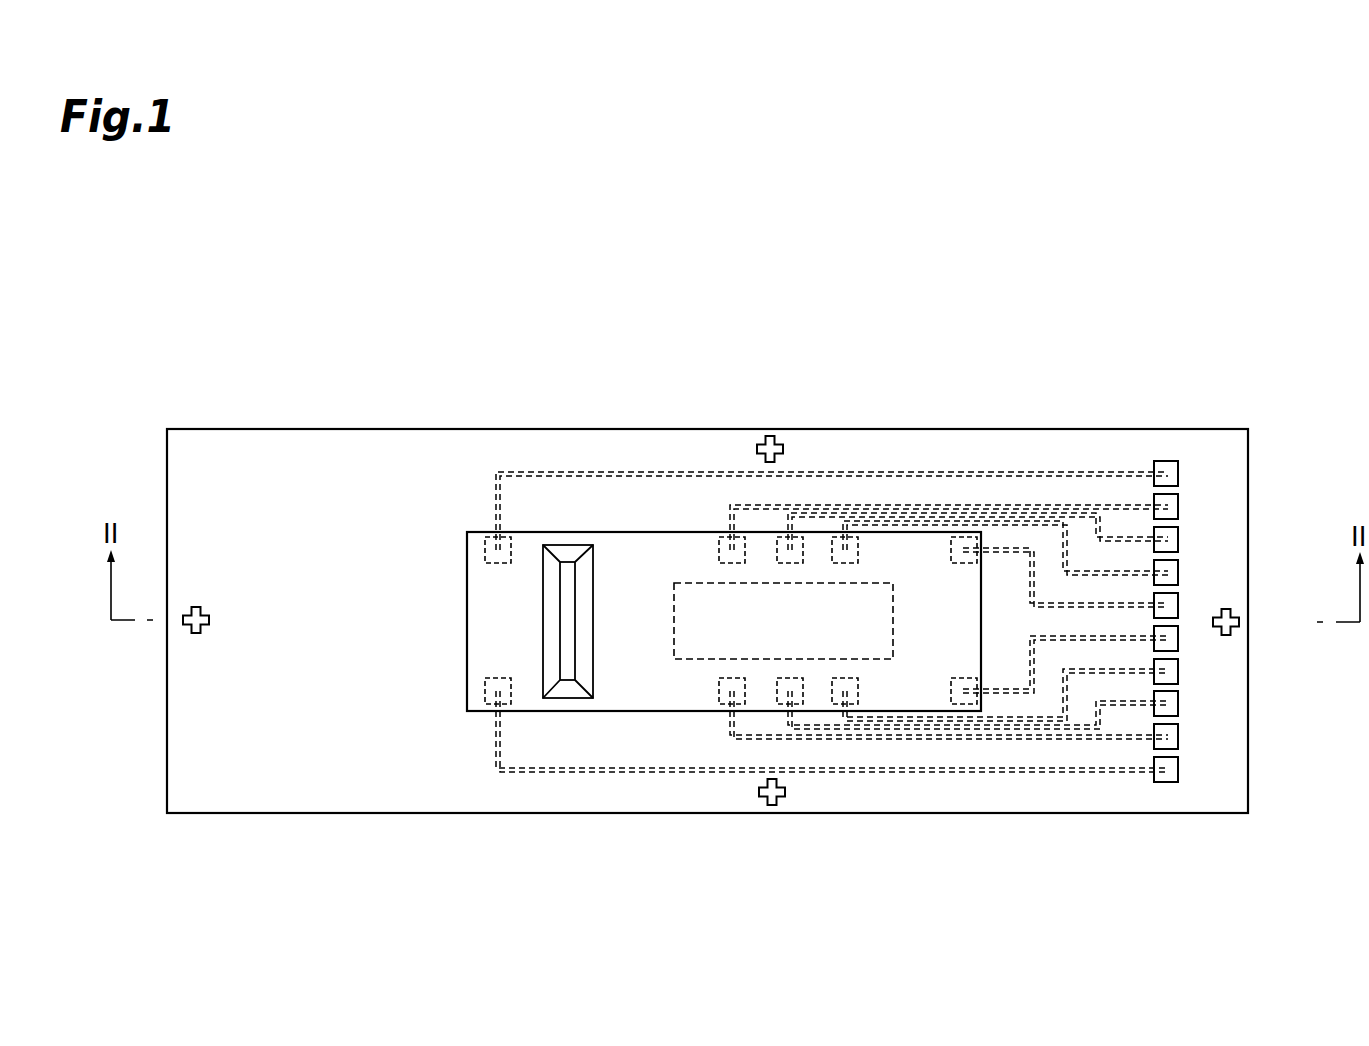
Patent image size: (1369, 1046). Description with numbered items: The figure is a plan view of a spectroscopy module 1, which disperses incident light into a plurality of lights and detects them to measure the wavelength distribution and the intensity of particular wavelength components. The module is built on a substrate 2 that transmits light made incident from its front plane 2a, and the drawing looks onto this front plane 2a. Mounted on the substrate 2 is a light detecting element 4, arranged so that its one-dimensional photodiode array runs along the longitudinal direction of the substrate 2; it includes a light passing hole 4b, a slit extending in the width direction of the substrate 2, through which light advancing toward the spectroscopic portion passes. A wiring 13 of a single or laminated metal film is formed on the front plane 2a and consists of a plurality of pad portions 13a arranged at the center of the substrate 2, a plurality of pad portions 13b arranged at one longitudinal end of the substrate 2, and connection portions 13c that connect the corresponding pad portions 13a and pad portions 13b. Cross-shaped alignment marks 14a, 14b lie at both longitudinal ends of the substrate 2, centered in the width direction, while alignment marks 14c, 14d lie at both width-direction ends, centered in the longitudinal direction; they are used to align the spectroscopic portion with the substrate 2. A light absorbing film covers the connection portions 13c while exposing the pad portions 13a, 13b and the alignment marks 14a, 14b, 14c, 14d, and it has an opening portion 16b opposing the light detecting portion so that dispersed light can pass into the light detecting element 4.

The spectroscopy module 1 is at (368, 262).
The substrate 2 is at (248, 415).
The front plane 2a is at (418, 450).
The light detecting element 4 is at (460, 578).
The light passing hole 4b is at (575, 615).
The wiring 13 is at (1017, 445).
The pad portions 13a is at (485, 545).
The pad portions 13b is at (1172, 473).
The connection portions 13c is at (973, 475).
The alignment mark 14a is at (1232, 632).
The alignment mark 14b is at (196, 632).
The alignment mark 14c is at (772, 805).
The alignment mark 14d is at (771, 437).
The opening portion 16b is at (675, 628).